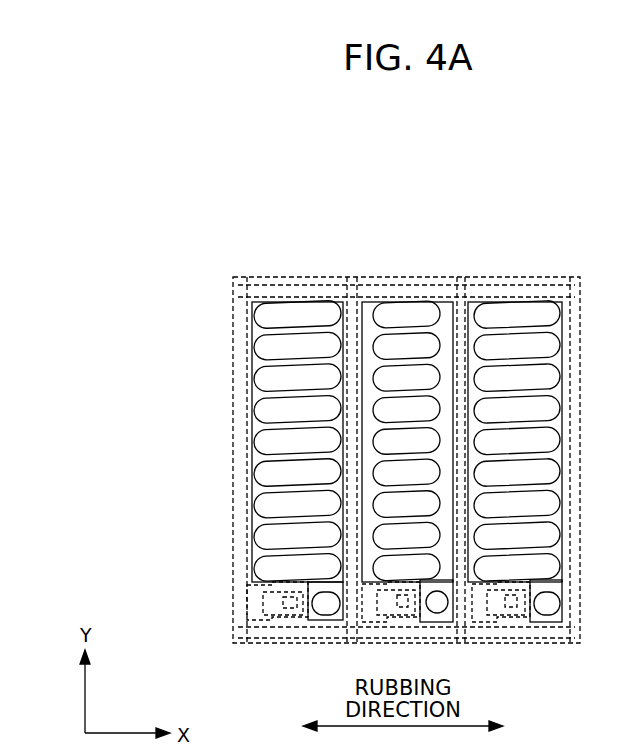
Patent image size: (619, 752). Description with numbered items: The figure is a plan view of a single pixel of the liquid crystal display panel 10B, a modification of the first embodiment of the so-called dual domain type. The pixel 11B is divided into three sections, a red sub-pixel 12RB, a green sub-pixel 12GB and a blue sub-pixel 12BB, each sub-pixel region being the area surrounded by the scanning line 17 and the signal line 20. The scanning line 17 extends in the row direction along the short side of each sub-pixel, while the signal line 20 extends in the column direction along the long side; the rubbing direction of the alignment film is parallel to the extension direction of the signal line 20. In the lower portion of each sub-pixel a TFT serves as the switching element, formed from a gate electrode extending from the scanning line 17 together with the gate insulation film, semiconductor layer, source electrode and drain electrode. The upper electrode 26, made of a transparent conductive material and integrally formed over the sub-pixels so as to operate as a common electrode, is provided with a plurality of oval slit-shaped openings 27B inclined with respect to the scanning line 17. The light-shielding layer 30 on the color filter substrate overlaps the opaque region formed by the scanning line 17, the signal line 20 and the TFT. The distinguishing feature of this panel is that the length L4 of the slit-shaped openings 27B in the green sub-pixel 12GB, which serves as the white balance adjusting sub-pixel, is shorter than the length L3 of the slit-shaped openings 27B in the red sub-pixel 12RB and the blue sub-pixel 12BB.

The liquid crystal display panel 10B is at (312, 99).
The pixel group 11B is at (573, 149).
The red sub-pixel 12RB is at (348, 194).
The green sub-pixel 12GB is at (458, 194).
The blue sub-pixel 12BB is at (572, 194).
The length of the slit-shaped openings L3 is at (340, 277).
The length of the slit-shaped openings L4 is at (438, 277).
The scanning line 17 is at (258, 292).
The signal line 20 is at (250, 502).
The upper electrode 26 is at (256, 420).
The slit-shaped opening 27B is at (265, 467).
The light-shielding layer 30 is at (233, 530).
The element TFT is at (265, 592).